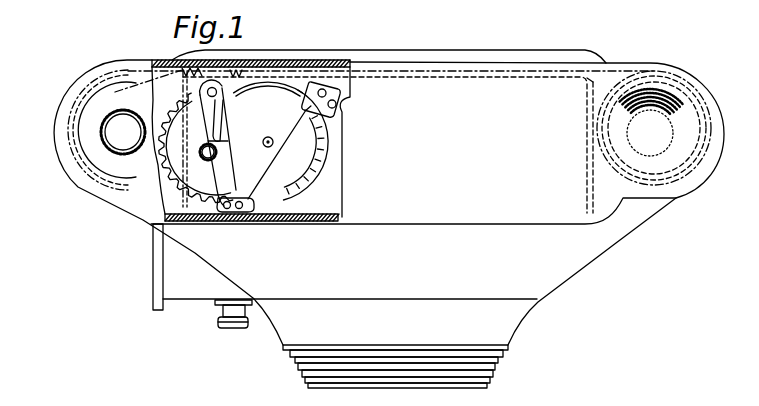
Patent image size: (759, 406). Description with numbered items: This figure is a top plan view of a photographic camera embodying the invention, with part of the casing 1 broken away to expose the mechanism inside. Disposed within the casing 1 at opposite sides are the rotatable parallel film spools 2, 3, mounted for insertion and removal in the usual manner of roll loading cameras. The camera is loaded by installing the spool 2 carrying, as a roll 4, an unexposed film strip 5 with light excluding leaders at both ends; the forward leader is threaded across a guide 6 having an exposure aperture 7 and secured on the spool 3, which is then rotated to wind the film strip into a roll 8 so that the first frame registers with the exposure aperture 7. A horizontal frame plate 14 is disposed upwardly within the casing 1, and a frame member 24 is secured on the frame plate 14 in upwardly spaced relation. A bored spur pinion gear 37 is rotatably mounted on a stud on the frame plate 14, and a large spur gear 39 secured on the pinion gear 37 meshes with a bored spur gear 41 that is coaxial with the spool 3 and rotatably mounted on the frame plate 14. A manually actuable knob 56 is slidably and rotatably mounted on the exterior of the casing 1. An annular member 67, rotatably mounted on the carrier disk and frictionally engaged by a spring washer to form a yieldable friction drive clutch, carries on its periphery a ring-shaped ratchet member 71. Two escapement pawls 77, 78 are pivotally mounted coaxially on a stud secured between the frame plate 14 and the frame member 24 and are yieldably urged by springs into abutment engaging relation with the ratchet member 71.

The casing 1 is at (623, 65).
The film spool 2 is at (673, 180).
The film spool 3 is at (63, 128).
The roll 4 is at (667, 80).
The film strip 5 is at (606, 68).
The guide 6 is at (532, 70).
The exposure aperture 7 is at (510, 78).
The roll 8 is at (116, 122).
The frame plate 14 is at (322, 214).
The frame member 24 is at (320, 121).
The pinion gear 37 is at (205, 156).
The large spur gear 39 is at (213, 208).
The bored spur gear 41 is at (160, 140).
The knob 56 is at (118, 83).
The annular member 67 is at (294, 179).
The ratchet member 71 is at (318, 163).
The escapement pawl 77 is at (210, 122).
The escapement pawl 78 is at (220, 141).